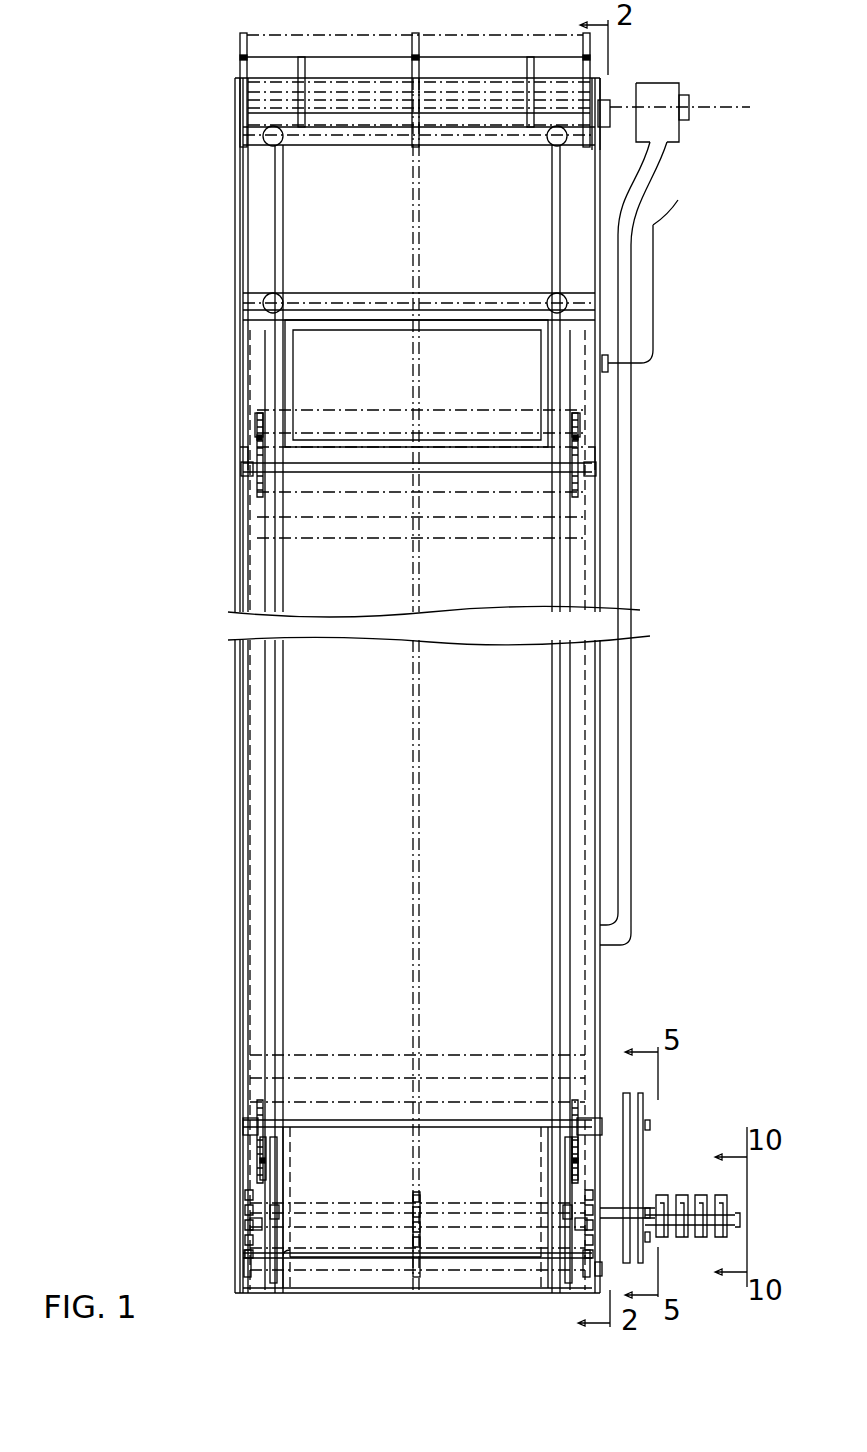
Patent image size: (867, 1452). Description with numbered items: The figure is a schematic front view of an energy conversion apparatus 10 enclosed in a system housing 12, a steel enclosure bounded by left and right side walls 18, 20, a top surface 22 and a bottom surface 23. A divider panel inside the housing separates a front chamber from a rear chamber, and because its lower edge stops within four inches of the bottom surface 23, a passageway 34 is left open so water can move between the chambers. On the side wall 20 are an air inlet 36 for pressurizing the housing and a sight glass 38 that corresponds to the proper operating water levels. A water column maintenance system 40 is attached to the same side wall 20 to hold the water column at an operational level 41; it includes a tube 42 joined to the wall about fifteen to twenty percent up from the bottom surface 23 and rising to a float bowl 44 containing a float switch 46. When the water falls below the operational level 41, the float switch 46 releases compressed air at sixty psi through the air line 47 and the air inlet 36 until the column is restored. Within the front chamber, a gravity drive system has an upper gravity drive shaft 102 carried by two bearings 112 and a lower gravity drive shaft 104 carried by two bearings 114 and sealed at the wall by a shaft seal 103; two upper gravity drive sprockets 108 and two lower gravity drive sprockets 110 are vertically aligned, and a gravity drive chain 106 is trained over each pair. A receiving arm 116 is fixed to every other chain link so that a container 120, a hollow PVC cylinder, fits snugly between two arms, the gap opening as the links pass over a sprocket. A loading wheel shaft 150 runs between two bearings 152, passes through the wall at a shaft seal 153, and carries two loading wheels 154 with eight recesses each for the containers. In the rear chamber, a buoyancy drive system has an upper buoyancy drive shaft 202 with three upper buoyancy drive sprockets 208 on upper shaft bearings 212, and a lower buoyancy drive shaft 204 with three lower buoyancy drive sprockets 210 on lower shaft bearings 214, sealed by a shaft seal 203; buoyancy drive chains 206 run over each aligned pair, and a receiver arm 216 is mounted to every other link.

The energy conversion apparatus 10 is at (185, 90).
The system housing 12 is at (235, 228).
The left side wall 18 is at (243, 368).
The right side wall 20 is at (600, 562).
The top surface 22 is at (600, 78).
The bottom surface 23 is at (390, 1293).
The passageway 34 is at (455, 1275).
The air inlet 36 is at (608, 370).
The sight glass 38 is at (612, 118).
The water column maintenance system 40 is at (708, 156).
The operational level 41 is at (710, 110).
The tube 42 is at (632, 280).
The float bowl 44 is at (660, 95).
The float switch 46 is at (689, 98).
The air line 47 is at (678, 200).
The upper gravity drive shaft 102 is at (322, 455).
The shaft seal 103 is at (605, 1122).
The lower gravity drive shaft 104 is at (327, 1125).
The gravity drive chains 106 is at (283, 1015).
The upper gravity drive sprockets 108 is at (257, 452).
The lower gravity drive sprockets 110 is at (257, 1115).
The bearings 112 is at (243, 468).
The bearings 114 is at (243, 1126).
The receiving arm 116 is at (255, 423).
The container 120 is at (458, 440).
The loading wheel shaft 150 is at (480, 1208).
The bearings 152 is at (245, 1212).
The shaft seal 153 is at (605, 1215).
The loading wheels 154 is at (277, 1235).
The upper buoyancy drive shaft 202 is at (485, 80).
The shaft seal 203 is at (640, 1210).
The lower buoyancy drive shaft 204 is at (505, 1220).
The buoyancy drive chains 206 is at (243, 1020).
The upper buoyancy drive sprockets 208 is at (240, 72).
The lower buoyancy drive sprockets 210 is at (413, 1215).
The upper shaft bearings 212 is at (248, 85).
The lower shaft bearings 214 is at (250, 1224).
The receiver arm 216 is at (247, 45).